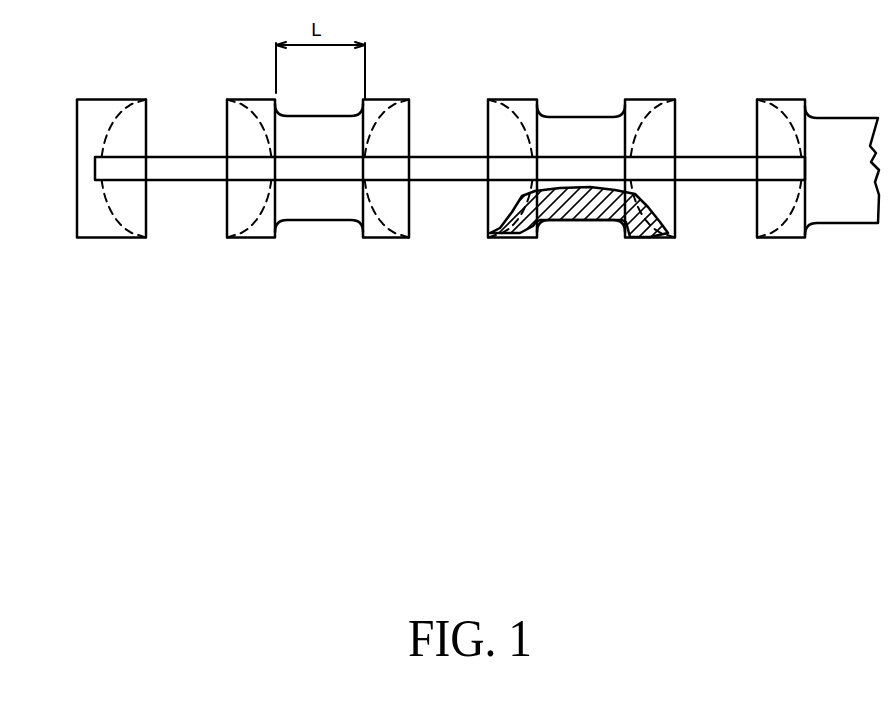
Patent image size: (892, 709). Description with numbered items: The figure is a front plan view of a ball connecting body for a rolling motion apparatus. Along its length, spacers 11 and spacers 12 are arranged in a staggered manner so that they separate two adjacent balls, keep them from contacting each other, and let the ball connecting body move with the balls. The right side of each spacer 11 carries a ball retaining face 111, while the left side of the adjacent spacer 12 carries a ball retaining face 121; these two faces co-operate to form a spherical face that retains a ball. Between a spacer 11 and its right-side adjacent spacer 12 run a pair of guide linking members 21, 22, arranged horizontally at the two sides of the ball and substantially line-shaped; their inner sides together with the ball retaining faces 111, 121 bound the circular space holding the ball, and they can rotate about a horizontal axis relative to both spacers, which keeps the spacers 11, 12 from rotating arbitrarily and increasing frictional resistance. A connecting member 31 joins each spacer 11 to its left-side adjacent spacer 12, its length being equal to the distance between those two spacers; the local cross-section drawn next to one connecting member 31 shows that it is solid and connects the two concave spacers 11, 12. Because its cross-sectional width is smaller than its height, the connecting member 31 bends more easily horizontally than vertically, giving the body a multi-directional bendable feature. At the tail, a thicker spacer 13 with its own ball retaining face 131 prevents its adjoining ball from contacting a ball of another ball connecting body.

The spacer 11 is at (382, 230).
The ball retaining face 111 is at (408, 128).
The spacer 12 is at (260, 230).
The ball retaining face 121 is at (230, 128).
The spacer 13 is at (93, 223).
The ball retaining face 131 is at (143, 128).
The guide linking member 21 is at (450, 266).
The guide linking member 22 is at (713, 172).
The connecting member 31 is at (310, 207).